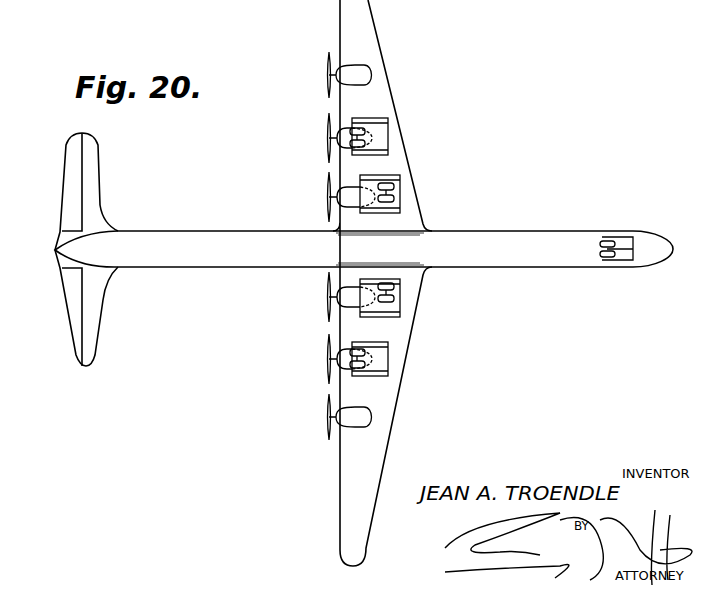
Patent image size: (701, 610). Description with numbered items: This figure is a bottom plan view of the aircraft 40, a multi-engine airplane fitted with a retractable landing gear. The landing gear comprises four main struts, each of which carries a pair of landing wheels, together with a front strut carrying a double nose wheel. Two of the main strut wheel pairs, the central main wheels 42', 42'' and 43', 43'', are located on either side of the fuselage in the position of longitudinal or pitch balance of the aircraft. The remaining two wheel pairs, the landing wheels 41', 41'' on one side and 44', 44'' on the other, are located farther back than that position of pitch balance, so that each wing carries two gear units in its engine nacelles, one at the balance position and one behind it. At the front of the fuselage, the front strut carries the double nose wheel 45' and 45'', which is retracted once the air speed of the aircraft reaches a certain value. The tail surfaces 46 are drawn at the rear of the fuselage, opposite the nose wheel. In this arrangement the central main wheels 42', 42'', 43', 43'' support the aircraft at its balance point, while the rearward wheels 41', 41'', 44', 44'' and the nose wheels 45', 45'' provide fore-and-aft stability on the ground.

The aircraft 40 is at (186, 243).
The landing wheel 41' is at (380, 124).
The landing wheel 41'' is at (399, 133).
The central main wheel 42' is at (392, 194).
The central main wheel 42'' is at (419, 205).
The central main wheel 43' is at (393, 297).
The central main wheel 43'' is at (420, 314).
The landing wheel 44' is at (389, 359).
The landing wheel 44'' is at (400, 385).
The nose wheel 45' is at (612, 229).
The nose wheel 45'' is at (603, 275).
The tail plane 46 is at (73, 308).